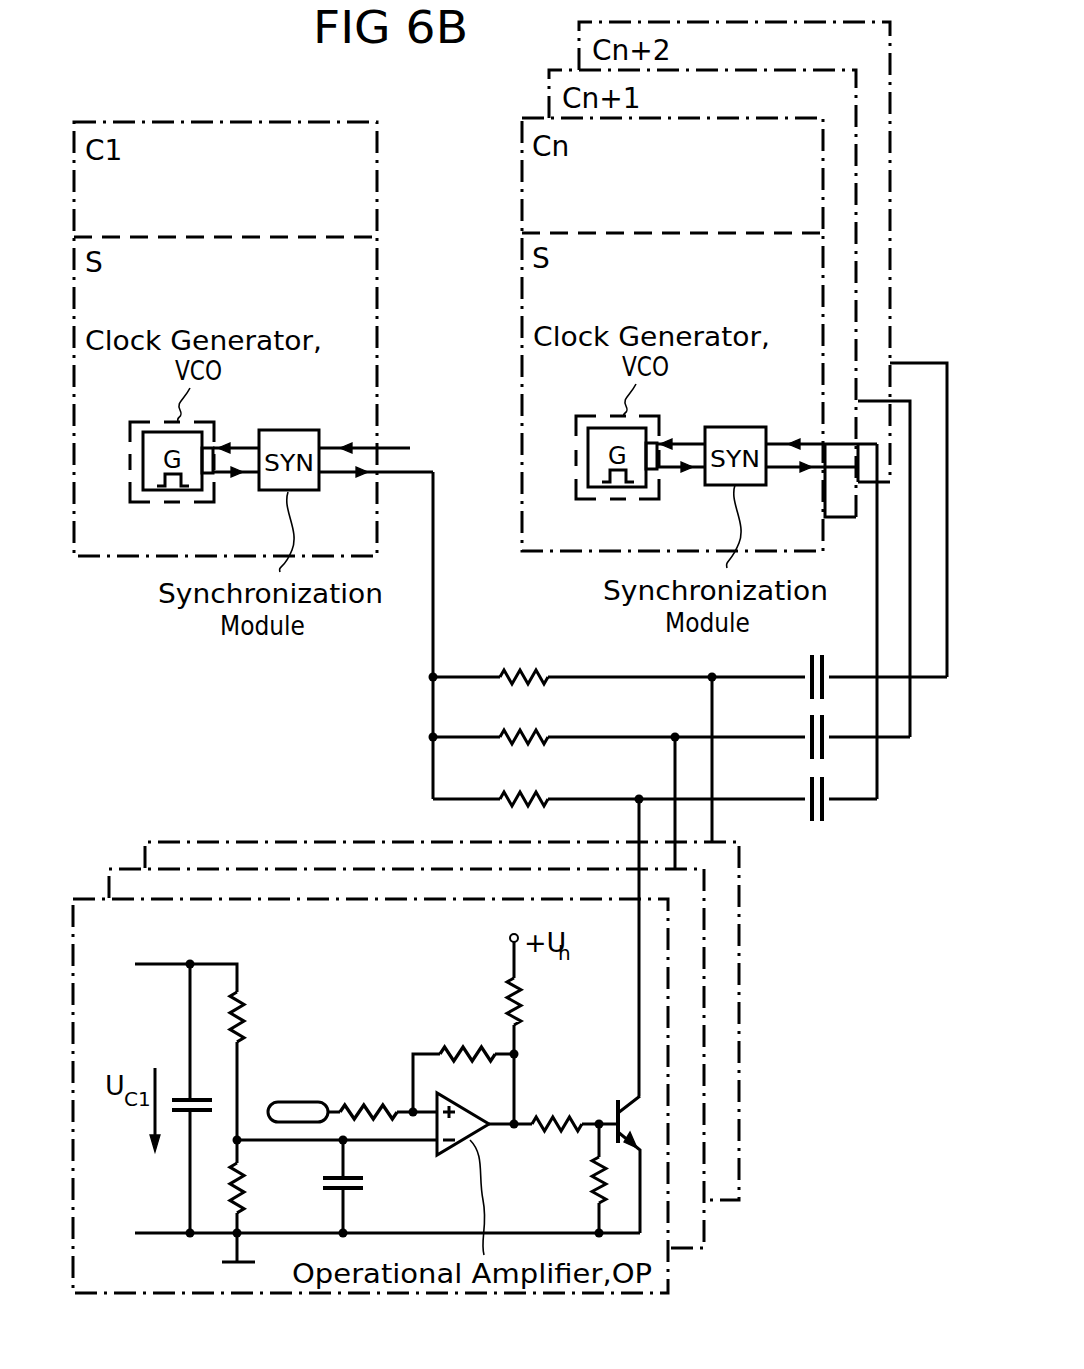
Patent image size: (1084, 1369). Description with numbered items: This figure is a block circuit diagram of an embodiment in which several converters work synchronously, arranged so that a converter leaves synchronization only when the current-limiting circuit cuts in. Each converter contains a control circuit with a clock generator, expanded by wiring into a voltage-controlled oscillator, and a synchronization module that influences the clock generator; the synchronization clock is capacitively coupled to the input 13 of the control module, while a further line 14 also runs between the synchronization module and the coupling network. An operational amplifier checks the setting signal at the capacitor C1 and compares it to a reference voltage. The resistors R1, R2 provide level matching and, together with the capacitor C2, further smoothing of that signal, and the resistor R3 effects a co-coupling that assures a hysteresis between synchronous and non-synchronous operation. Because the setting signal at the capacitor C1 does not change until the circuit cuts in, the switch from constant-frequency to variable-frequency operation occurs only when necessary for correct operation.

The input of the control module 13 is at (598, 429).
The synchronization output line 14 is at (588, 485).
The resistor R1 is at (262, 1006).
The resistor R2 is at (255, 1190).
The resistor R3 is at (450, 1046).
The capacitor C1 is at (182, 1116).
The capacitor C2 is at (365, 1186).